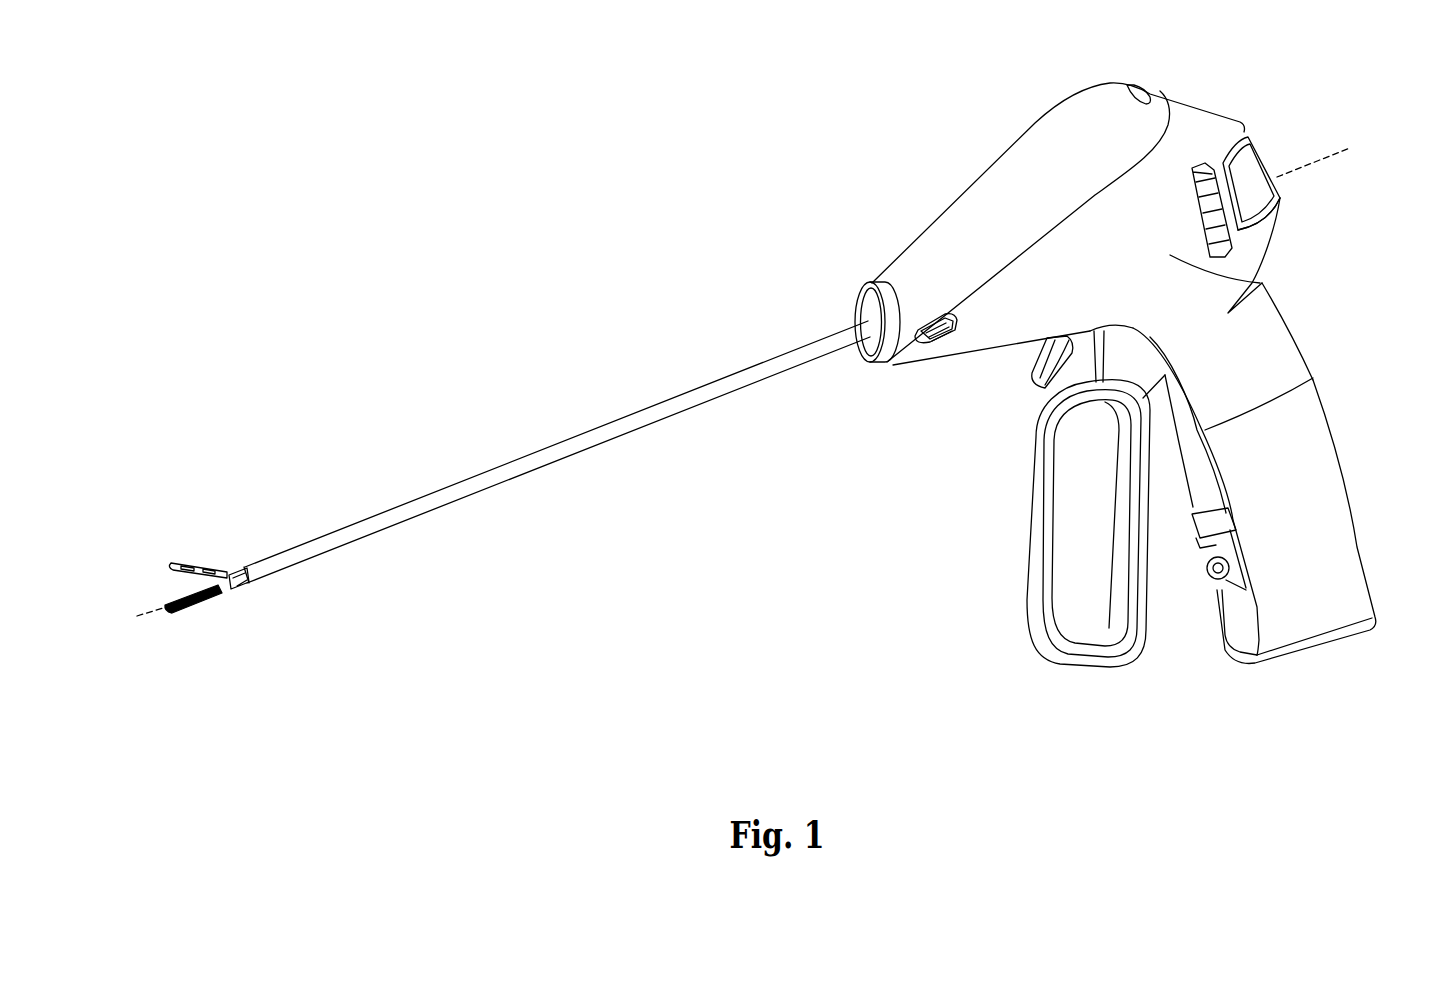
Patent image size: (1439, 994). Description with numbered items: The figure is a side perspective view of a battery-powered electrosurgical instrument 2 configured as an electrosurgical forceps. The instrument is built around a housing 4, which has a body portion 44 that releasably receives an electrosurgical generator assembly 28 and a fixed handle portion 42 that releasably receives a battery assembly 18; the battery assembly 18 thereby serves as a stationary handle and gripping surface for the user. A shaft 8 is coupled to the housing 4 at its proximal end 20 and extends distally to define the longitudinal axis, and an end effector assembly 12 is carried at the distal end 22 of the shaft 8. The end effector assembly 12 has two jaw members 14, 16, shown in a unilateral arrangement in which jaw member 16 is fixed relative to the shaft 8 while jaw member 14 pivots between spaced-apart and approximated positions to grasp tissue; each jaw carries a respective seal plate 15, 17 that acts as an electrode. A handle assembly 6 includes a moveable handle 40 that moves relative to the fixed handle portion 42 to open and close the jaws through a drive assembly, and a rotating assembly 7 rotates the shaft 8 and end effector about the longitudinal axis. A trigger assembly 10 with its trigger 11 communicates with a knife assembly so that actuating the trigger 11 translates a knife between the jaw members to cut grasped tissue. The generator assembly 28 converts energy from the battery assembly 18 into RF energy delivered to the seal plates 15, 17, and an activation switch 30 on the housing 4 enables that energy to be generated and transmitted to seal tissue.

The electrosurgical instrument 2 is at (676, 312).
The housing 4 is at (1147, 57).
The handle assembly 6 is at (1236, 700).
The rotating assembly 7 is at (1227, 190).
The shaft 8 is at (448, 485).
The trigger assembly 10 is at (1011, 414).
The trigger 11 is at (1040, 377).
The end effector assembly 12 is at (173, 512).
The jaw member 14 is at (178, 560).
The seal plate 15 is at (170, 567).
The jaw member 16 is at (166, 613).
The seal plate 17 is at (172, 595).
The battery assembly 18 is at (1348, 562).
The proximal end 20 is at (853, 322).
The distal end 22 is at (268, 557).
The electrosurgical generator assembly 28 is at (1012, 167).
The activation switch 30 is at (1270, 193).
The moveable handle 40 is at (1037, 597).
The fixed handle portion 42 is at (1270, 340).
The body portion 44 is at (1260, 283).